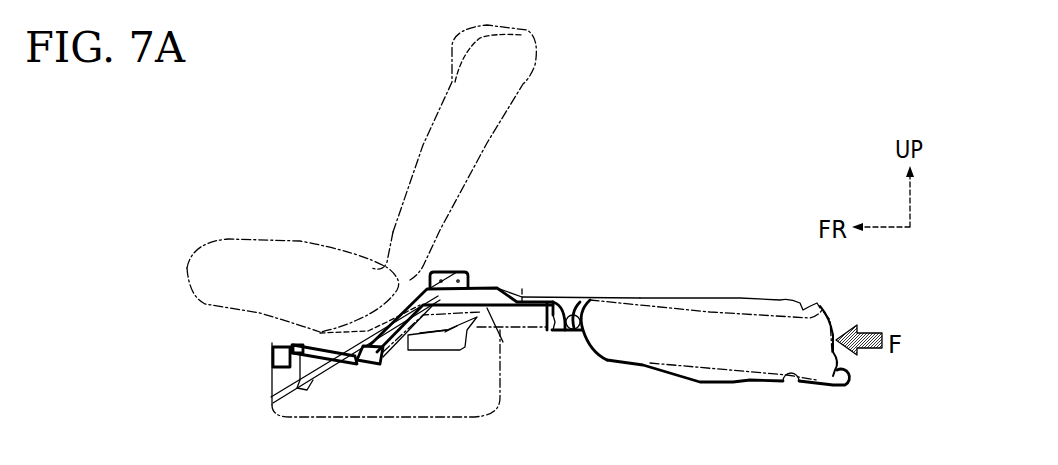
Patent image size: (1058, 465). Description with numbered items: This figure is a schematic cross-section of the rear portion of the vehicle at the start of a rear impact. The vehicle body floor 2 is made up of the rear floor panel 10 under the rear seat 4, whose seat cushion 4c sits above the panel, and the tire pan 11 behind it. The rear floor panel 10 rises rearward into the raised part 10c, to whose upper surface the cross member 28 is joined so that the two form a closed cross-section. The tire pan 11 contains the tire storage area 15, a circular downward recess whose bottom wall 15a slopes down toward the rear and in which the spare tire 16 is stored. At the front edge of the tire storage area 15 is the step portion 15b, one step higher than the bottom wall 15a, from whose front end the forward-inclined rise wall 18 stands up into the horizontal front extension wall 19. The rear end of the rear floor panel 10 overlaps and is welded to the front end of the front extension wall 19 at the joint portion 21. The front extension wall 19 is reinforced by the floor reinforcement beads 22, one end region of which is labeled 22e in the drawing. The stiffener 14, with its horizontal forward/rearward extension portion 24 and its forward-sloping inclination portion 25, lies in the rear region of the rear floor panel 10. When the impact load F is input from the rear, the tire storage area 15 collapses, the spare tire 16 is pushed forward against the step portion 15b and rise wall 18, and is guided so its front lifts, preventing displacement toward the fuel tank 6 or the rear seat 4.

The vehicle body floor 2 is at (574, 289).
The rear seat 4 is at (532, 26).
The seat cushion 4c is at (258, 232).
The fuel tank 6 is at (353, 428).
The rear floor panel 10 is at (455, 289).
The raised part 10c is at (480, 272).
The tire pan 11 is at (729, 324).
The stiffener 14 is at (458, 322).
The tire storage area 15 is at (792, 378).
The bottom wall 15a is at (627, 360).
The step portion 15b is at (583, 302).
The spare tire 16 is at (708, 298).
The rise wall 18 is at (572, 302).
The front extension wall 19 is at (537, 300).
The joint portion 21 is at (527, 305).
The floor reinforcement beads 22 is at (590, 228).
The end portion of bracket 22e is at (545, 298).
The forward/rearward extension portion 24 is at (487, 308).
The inclination portion 25 is at (433, 320).
The cross member 28 is at (457, 270).